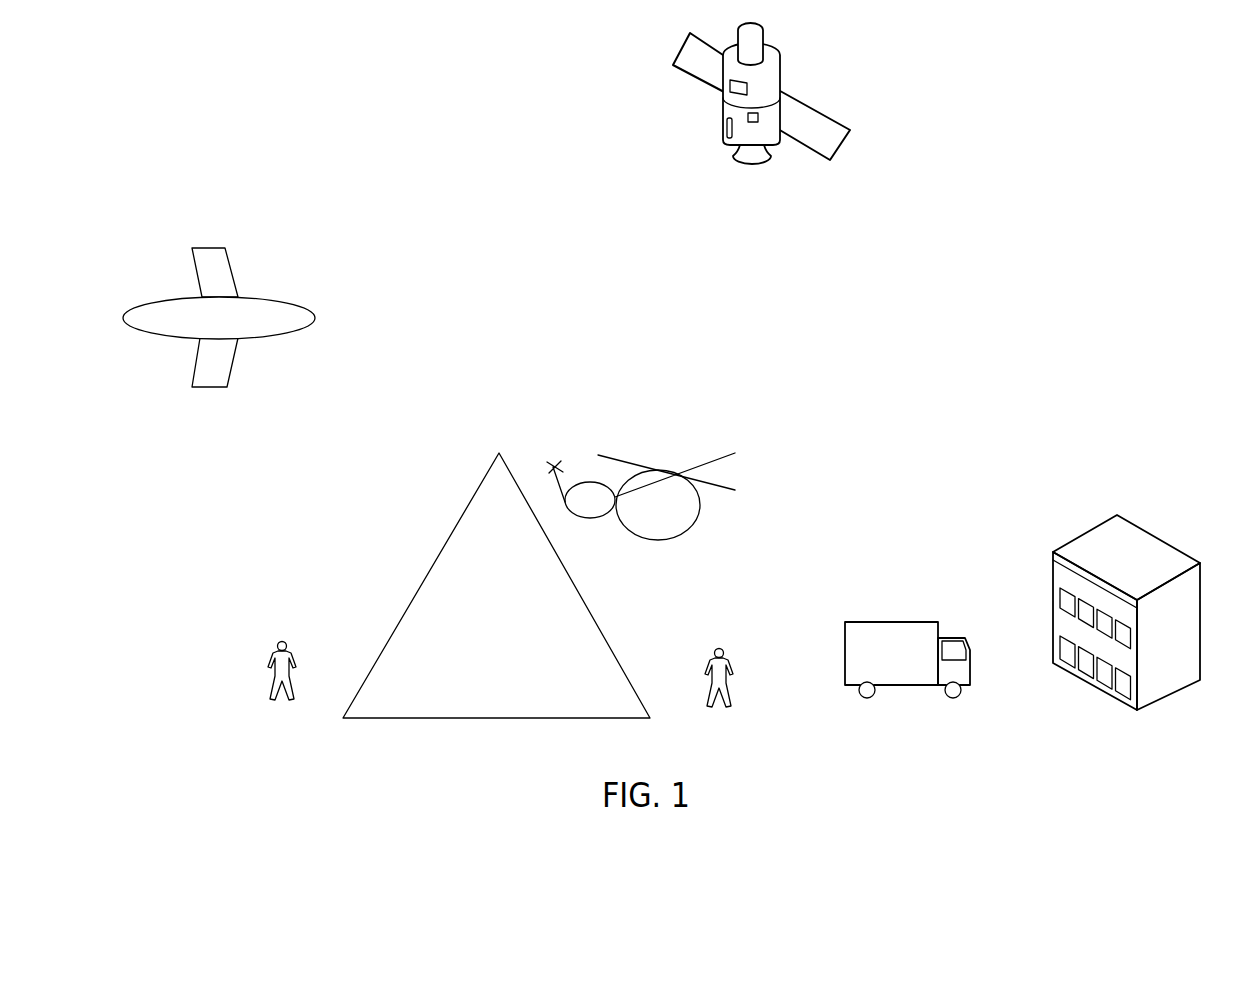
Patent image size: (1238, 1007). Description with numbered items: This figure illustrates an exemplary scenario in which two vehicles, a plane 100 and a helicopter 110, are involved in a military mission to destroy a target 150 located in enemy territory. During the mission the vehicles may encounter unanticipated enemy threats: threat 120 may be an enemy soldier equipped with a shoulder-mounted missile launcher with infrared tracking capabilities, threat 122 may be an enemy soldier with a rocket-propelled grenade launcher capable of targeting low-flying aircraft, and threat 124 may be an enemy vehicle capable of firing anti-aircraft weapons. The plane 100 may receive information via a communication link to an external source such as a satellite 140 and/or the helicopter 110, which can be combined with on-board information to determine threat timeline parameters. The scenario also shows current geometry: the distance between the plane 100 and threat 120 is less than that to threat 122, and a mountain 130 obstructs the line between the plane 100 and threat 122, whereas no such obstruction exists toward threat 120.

The plane 100 is at (277, 297).
The helicopter 110 is at (648, 538).
The threat 120 is at (287, 640).
The threat 122 is at (722, 646).
The threat 124 is at (895, 622).
The mountain 130 is at (463, 515).
The satellite 140 is at (720, 110).
The target 150 is at (1097, 523).